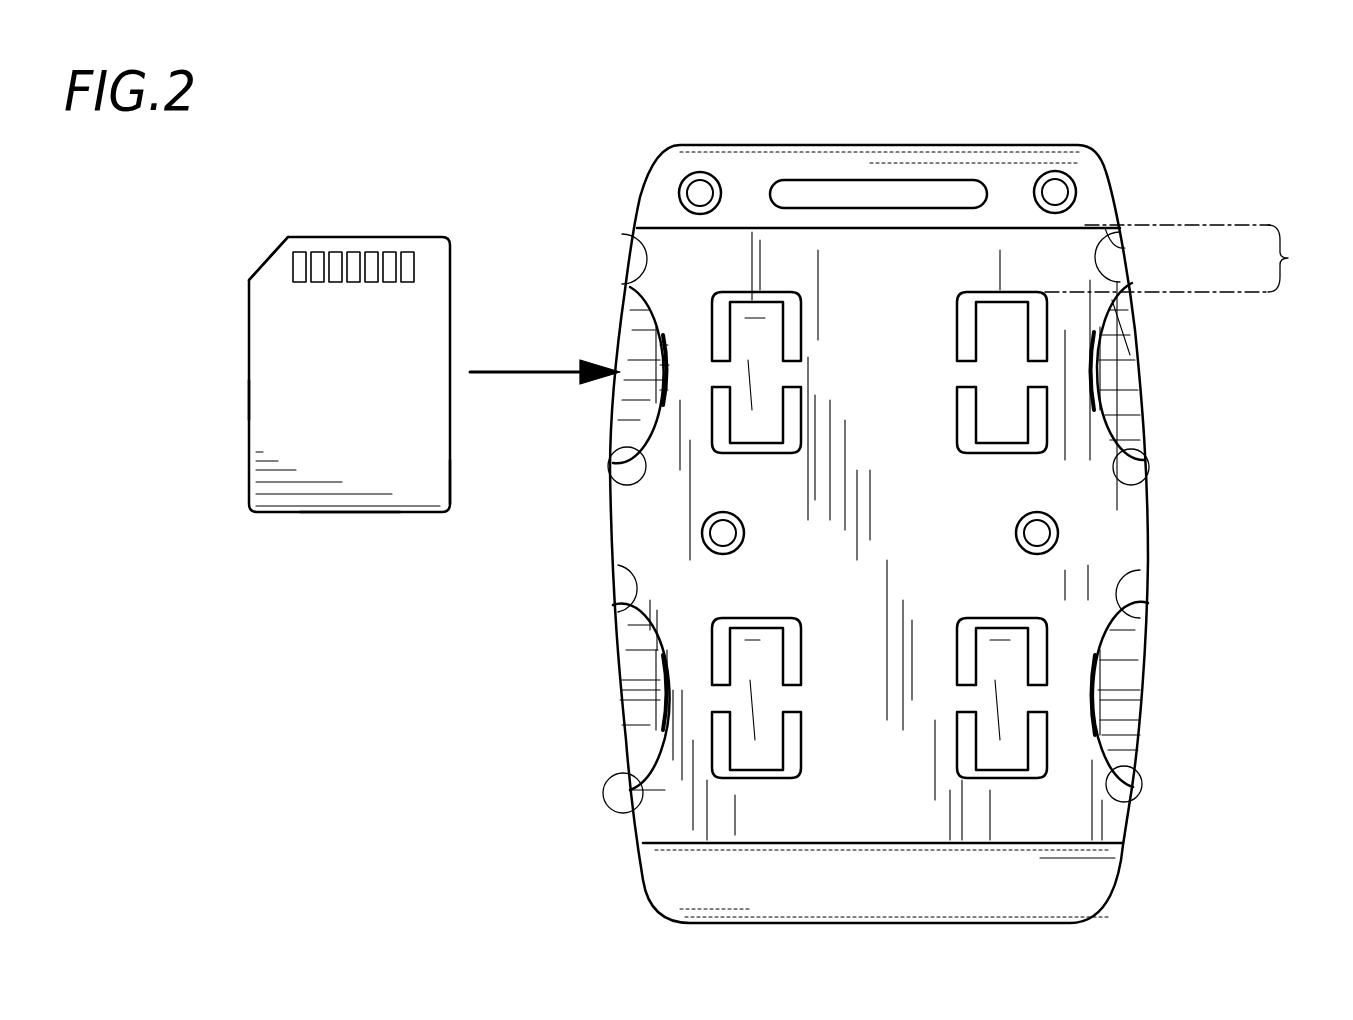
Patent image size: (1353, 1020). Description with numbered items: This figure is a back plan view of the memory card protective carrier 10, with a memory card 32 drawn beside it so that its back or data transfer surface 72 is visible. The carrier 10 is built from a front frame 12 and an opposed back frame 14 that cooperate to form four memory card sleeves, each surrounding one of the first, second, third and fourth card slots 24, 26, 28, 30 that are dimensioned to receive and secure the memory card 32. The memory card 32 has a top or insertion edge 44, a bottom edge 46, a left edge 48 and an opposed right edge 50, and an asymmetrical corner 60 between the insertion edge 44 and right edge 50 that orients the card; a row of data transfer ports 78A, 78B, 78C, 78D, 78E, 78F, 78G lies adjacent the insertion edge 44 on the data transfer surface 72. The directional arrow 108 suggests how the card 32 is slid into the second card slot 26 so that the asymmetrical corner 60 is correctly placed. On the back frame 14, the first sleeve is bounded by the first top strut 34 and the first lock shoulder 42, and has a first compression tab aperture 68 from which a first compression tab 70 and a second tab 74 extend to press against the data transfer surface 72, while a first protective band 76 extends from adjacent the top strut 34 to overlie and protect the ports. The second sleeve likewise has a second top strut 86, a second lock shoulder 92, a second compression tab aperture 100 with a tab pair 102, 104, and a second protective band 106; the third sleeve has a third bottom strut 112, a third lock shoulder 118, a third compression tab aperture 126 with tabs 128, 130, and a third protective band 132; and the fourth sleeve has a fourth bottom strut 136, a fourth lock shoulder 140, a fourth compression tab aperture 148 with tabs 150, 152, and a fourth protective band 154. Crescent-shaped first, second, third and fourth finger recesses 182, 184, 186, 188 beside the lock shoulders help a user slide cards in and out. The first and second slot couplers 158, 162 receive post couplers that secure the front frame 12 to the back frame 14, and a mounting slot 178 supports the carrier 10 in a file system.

The memory card protective carrier 10 is at (1262, 112).
The front frame 12 is at (634, 683).
The back frame 14 is at (655, 830).
The first card slot 24 is at (1165, 365).
The second card slot 26 is at (630, 338).
The third card slot 28 is at (1170, 625).
The fourth card slot 30 is at (632, 658).
The memory card 32 is at (160, 345).
The first top strut 34 is at (748, 228).
The first lock shoulder 42 is at (1105, 352).
The top or insertion edge 44 is at (299, 250).
The bottom edge 46 is at (345, 512).
The left edge 48 is at (450, 500).
The right edge 50 is at (248, 402).
The asymmetrical corner 60 is at (255, 273).
The first compression tab aperture 68 is at (963, 290).
The first compression tab 70 is at (1015, 325).
The back or data transfer surface 72 is at (262, 482).
The second tab 74 is at (990, 432).
The first protective band 76 is at (1187, 258).
The data transfer port 78A is at (300, 284).
The data transfer port 78B is at (317, 255).
The data transfer port 78C is at (336, 284).
The data transfer port 78D is at (354, 255).
The data transfer port 78E is at (372, 284).
The data transfer port 78F is at (390, 255).
The data transfer port 78G is at (407, 284).
The second top strut 86 is at (1115, 235).
The second lock shoulder 92 is at (665, 392).
The second compression tab aperture 100 is at (722, 290).
The second compression tab pair / first tab 102 is at (772, 322).
The second tab 104 is at (768, 432).
The second protective band 106 is at (647, 272).
The directional arrow 108 is at (515, 372).
The third bottom strut 112 is at (707, 845).
The third lock shoulder 118 is at (1128, 740).
The third compression tab aperture 126 is at (965, 615).
The third compression tab pair / first pair tab 128 is at (1018, 648).
The second tab 130 is at (985, 748).
The third protective band 132 is at (1145, 600).
The fourth bottom strut 136 is at (1125, 844).
The fourth lock shoulder 140 is at (628, 737).
The fourth compression tab aperture 148 is at (725, 615).
The fourth compression tab pair / first pair tab 150 is at (770, 650).
The second tab 152 is at (770, 750).
The fourth protective band 154 is at (636, 588).
The first slot coupler 158 is at (682, 178).
The second slot coupler 162 is at (1072, 178).
The mounting slot 178 is at (870, 182).
The first finger recess 182 is at (1135, 494).
The second finger recess 184 is at (635, 457).
The third finger recess 186 is at (1133, 814).
The fourth finger recess 188 is at (630, 797).